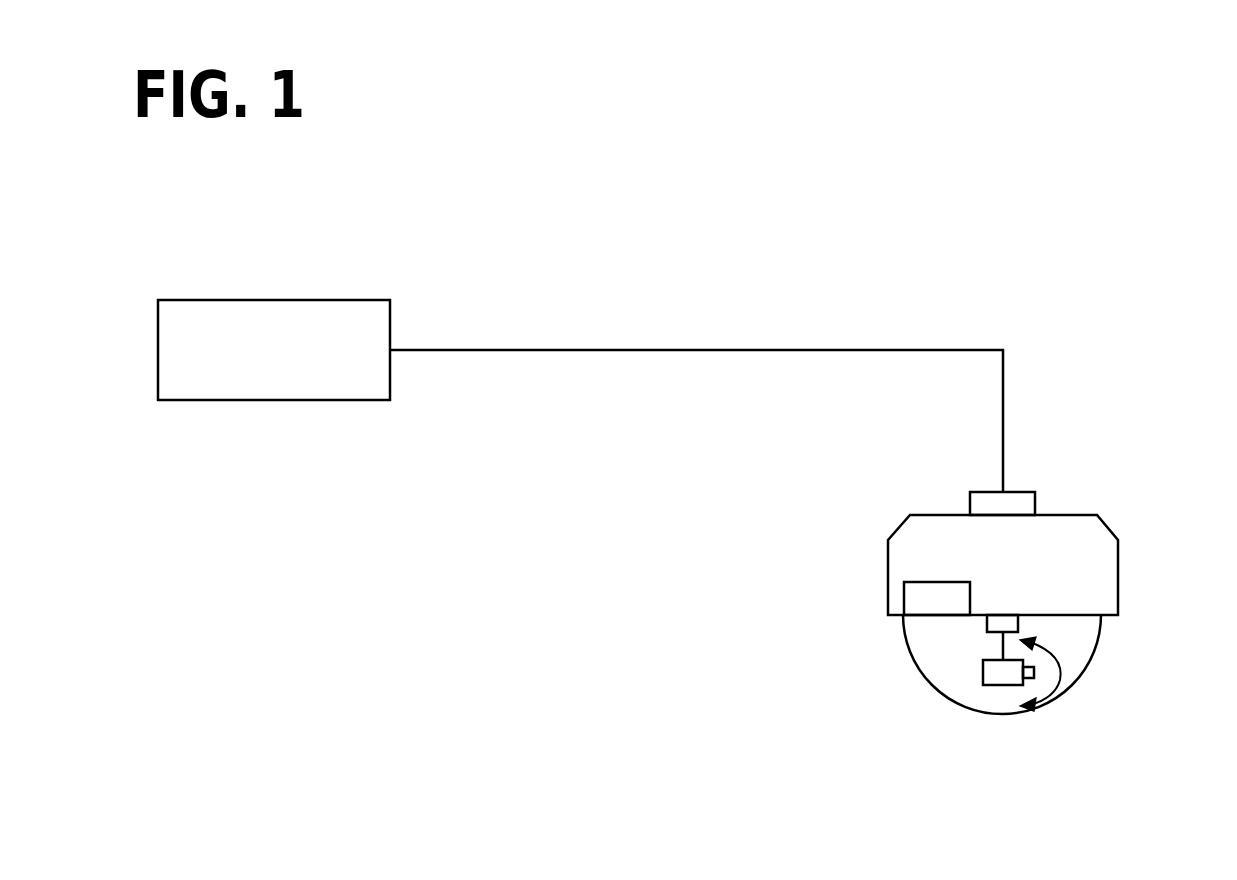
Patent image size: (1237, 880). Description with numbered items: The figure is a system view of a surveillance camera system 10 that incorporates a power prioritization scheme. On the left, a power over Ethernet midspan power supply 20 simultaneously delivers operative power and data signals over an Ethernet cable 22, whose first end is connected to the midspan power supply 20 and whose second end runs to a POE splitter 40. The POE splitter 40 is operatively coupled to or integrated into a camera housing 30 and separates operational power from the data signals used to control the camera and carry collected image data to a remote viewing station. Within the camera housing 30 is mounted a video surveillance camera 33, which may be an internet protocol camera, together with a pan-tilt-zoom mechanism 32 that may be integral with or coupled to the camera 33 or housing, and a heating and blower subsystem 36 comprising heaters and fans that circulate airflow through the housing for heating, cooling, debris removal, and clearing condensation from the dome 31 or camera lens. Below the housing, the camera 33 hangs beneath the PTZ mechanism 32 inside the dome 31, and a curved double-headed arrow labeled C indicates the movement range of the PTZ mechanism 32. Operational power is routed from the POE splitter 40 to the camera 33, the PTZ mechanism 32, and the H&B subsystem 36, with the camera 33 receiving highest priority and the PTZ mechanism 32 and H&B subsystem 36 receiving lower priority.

The surveillance camera system 10 is at (702, 247).
The POE midspan power supply 20 is at (275, 300).
The Ethernet cable 22 is at (688, 350).
The camera housing 30 is at (888, 567).
The dome 31 is at (1000, 715).
The pan-tilt-zoom (PTZ) mechanism 32 is at (1018, 622).
The video surveillance camera 33 is at (983, 673).
The heating and blower (H&B) subsystem 36 is at (937, 598).
The POE splitter 40 is at (970, 504).
The rotation direction C is at (1040, 674).